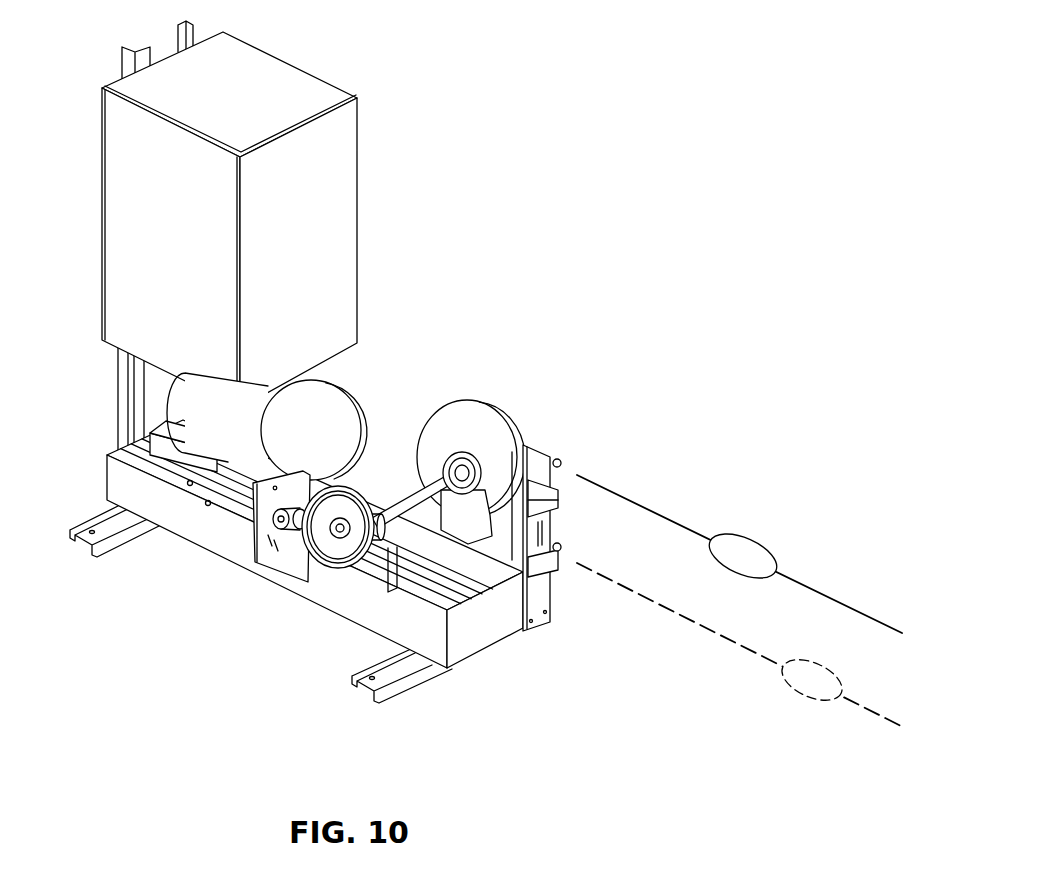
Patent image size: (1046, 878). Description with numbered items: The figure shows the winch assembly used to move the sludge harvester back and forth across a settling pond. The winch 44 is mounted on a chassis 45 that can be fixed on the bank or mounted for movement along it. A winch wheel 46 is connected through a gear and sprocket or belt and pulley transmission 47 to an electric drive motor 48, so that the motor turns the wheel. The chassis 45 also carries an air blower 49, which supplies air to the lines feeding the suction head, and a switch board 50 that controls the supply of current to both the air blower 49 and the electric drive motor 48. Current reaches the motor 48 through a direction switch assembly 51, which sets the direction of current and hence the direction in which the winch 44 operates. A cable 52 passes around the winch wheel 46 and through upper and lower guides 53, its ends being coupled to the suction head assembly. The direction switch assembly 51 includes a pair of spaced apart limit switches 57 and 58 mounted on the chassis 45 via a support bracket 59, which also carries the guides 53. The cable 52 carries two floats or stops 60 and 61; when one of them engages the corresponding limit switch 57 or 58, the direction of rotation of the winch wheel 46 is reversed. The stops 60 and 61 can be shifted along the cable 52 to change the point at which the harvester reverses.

The winch 44 is at (471, 378).
The chassis 45 is at (138, 492).
The winch wheel 46 is at (493, 410).
The gear and sprocket (or belt and pulley) transmission 47 is at (302, 566).
The electric drive motor 48 is at (379, 453).
The air blower 49 is at (329, 407).
The switch board 50 is at (322, 178).
The direction switch assembly 51 is at (570, 501).
The cable 52 is at (822, 579).
The upper and lower guides 53 is at (561, 462).
The limit switch 57 is at (537, 458).
The limit switch 58 is at (568, 588).
The support bracket 59 is at (540, 535).
The float or stop 60 is at (753, 539).
The float or stop 61 is at (803, 695).